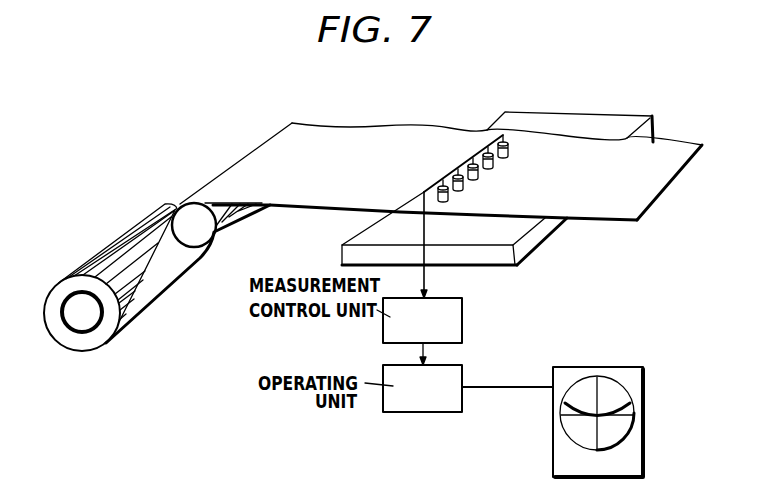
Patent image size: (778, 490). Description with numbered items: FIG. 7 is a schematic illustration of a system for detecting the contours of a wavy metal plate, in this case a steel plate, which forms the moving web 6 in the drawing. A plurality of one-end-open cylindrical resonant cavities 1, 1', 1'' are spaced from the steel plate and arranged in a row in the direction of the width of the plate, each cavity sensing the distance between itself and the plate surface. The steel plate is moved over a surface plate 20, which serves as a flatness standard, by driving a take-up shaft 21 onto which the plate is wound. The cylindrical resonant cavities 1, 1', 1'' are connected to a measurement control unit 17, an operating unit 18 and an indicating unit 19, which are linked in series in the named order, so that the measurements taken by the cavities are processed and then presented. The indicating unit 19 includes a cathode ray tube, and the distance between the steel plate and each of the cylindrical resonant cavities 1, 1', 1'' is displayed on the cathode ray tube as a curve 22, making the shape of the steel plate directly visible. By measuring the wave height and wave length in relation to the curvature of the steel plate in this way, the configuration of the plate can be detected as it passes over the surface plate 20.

The cylindrical resonant cavity 1 is at (547, 241).
The cylindrical resonant cavity 1' is at (524, 246).
The cylindrical resonant cavity 1'' is at (499, 252).
The web (sheet material) 6 is at (407, 127).
The measurement control unit 17 is at (438, 340).
The operating unit 18 is at (437, 406).
The indicating unit 19 is at (628, 367).
The surface plate 20 is at (598, 113).
The take-up shaft 21 is at (87, 330).
The cathode ray tube display 22 is at (620, 407).